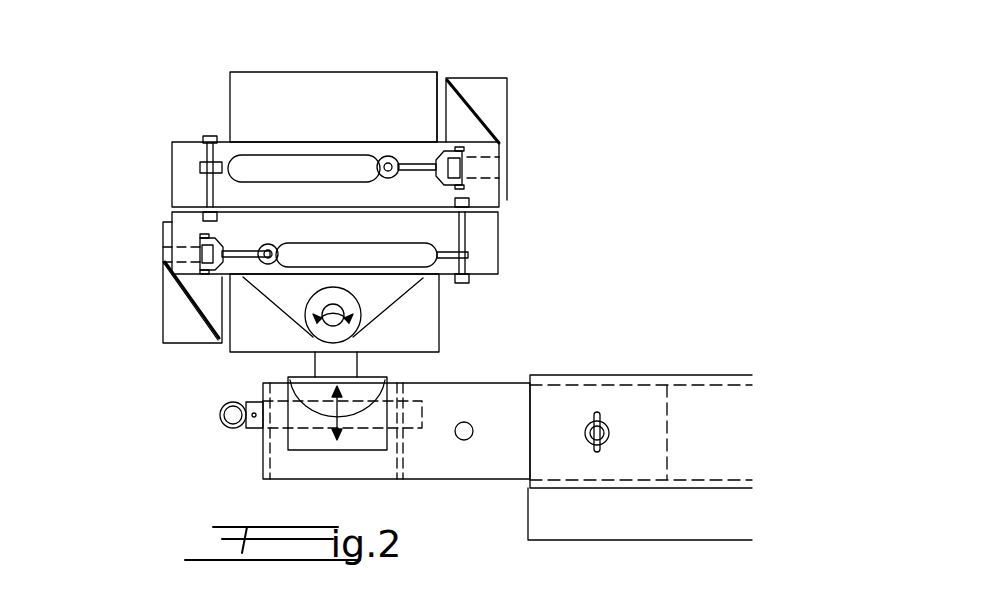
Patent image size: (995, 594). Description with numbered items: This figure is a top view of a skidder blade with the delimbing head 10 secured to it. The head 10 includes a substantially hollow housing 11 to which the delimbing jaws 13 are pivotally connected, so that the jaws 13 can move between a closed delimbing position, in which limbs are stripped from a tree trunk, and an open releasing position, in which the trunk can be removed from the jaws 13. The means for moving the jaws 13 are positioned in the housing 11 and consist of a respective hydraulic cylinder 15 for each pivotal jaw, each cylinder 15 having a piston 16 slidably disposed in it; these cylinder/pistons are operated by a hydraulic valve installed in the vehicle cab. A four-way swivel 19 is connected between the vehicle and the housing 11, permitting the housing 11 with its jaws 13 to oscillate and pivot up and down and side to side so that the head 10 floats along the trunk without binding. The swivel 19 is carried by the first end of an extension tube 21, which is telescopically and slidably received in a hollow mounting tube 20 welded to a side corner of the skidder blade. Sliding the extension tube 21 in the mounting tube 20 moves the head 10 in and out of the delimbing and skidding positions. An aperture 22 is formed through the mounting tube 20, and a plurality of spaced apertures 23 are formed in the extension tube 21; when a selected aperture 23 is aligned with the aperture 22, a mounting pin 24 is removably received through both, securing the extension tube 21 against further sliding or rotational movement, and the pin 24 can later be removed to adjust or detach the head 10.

The delimbing head 10 is at (141, 164).
The housing 11 is at (185, 163).
The delimbing jaws 13 is at (503, 167).
The cylinder 15 is at (288, 173).
The piston 16 is at (404, 165).
The four-way swivel 19 is at (312, 365).
The mounting tube 20 is at (718, 400).
The extension tube 21 is at (417, 466).
The aperture 22 is at (610, 432).
The spaced apertures 23 is at (472, 422).
The mounting pin 24 is at (597, 412).